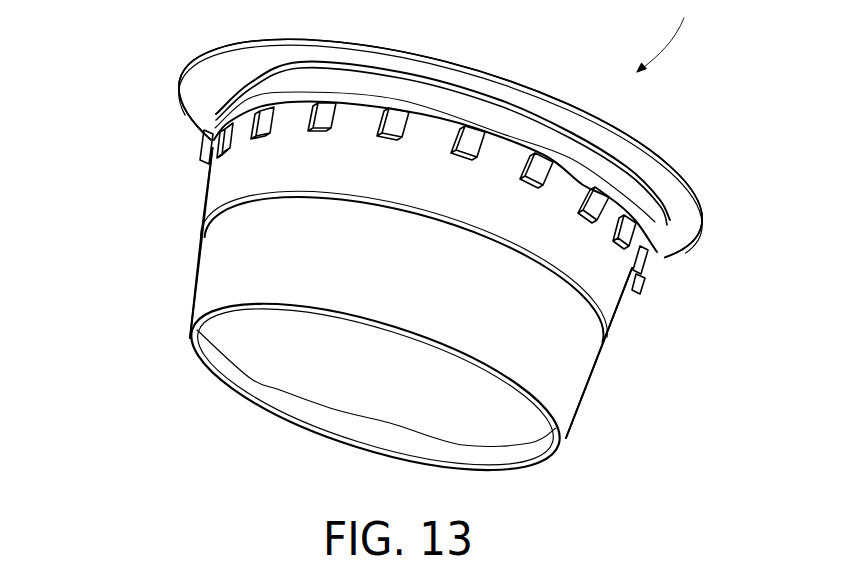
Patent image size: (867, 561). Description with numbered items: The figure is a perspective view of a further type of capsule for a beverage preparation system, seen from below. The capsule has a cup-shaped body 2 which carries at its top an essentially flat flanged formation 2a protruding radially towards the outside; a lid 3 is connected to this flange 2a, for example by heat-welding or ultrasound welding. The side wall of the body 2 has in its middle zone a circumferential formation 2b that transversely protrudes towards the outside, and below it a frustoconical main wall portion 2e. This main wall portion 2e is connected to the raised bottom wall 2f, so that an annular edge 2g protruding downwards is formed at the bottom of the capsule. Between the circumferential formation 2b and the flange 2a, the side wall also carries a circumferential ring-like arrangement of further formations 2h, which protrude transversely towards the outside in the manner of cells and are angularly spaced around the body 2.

The cup-shaped body 2 is at (594, 384).
The lid 3 is at (512, 74).
The flanged formation 2a is at (212, 75).
The circumferential formation 2b is at (196, 231).
The frustoconical main wall portion 2e is at (212, 258).
The raised bottom wall 2f is at (477, 413).
The annular edge 2g is at (252, 388).
The protruding formations 2h is at (200, 147).